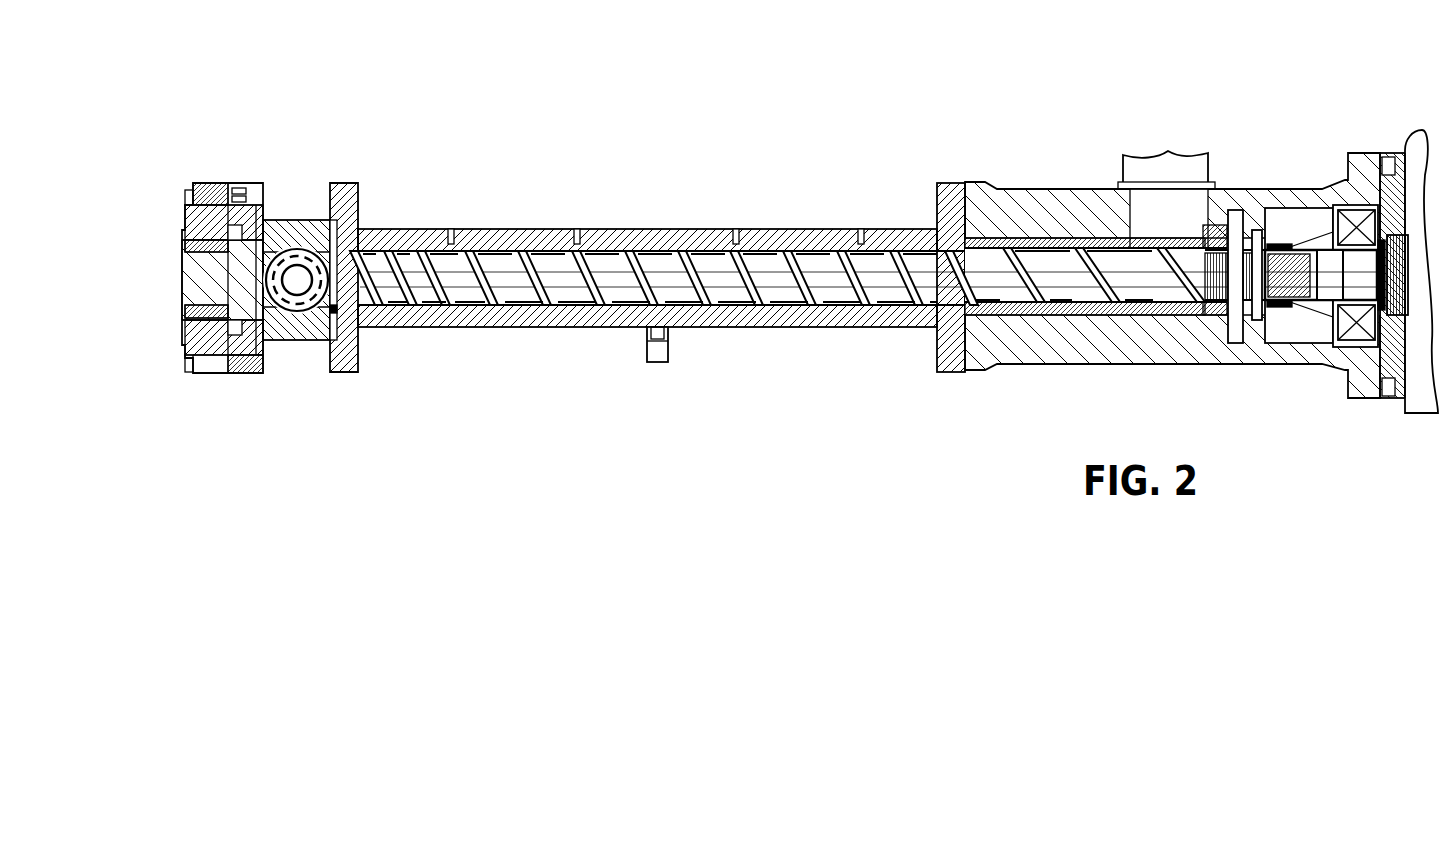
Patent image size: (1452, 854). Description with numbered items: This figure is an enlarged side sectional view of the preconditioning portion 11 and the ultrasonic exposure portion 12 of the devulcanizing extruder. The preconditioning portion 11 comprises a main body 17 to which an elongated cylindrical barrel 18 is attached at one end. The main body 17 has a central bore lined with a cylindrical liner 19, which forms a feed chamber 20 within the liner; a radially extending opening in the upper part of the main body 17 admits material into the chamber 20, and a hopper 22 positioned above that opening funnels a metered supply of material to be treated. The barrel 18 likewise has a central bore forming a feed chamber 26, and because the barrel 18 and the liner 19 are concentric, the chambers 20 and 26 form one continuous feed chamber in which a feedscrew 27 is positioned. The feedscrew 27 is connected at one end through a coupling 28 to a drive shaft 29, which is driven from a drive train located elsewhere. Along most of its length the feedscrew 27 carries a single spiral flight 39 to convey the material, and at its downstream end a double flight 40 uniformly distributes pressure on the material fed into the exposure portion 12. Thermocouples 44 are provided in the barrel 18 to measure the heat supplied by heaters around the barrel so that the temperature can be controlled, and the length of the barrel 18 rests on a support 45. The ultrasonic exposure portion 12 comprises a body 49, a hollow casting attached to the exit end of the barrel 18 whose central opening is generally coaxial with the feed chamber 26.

The preconditioning portion 11 is at (573, 453).
The ultrasonic exposure portion 12 is at (300, 395).
The main body 17 is at (1183, 353).
The barrel 18 is at (751, 220).
The liner 19 is at (1080, 236).
The feed chamber 20 is at (1102, 302).
The hopper 22 is at (1168, 165).
The feed chamber 26 is at (850, 302).
The feedscrew 27 is at (904, 236).
The coupling 28 is at (1296, 240).
The drive shaft 29 is at (1345, 262).
The spiral flight 39 is at (797, 292).
The double flight 40 is at (398, 236).
The thermocouples 44 is at (451, 229).
The support 45 is at (657, 362).
The body 49 is at (298, 228).